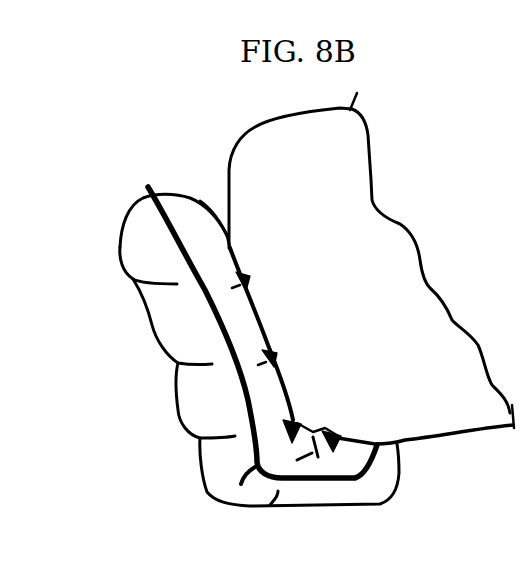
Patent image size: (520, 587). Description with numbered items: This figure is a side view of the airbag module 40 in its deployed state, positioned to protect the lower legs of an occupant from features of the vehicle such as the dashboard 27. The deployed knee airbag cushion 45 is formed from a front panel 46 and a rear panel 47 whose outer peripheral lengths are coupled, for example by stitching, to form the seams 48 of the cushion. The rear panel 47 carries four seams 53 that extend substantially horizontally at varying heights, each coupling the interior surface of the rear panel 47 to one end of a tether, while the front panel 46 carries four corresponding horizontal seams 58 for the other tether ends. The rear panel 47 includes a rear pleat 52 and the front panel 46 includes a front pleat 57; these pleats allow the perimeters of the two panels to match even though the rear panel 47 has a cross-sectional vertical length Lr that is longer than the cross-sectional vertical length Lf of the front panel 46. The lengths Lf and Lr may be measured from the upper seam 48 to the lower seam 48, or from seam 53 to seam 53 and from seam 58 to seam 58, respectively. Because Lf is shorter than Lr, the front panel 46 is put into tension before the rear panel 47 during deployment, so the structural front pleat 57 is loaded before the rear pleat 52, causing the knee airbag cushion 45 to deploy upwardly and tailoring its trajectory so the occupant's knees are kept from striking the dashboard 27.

The dashboard 27 is at (383, 271).
The airbag module 40 is at (106, 415).
The knee airbag cushion 45 is at (163, 176).
The front panel 46 is at (197, 197).
The rear panel 47 is at (127, 265).
The seams 48 is at (142, 189).
The rear pleat 52 is at (232, 481).
The seams 53 is at (145, 285).
The front pleat 57 is at (323, 430).
The seams 58 is at (246, 276).
The cross-sectional vertical length of the front panel Lf is at (335, 437).
The cross-sectional vertical length of the rear panel Lr is at (253, 508).